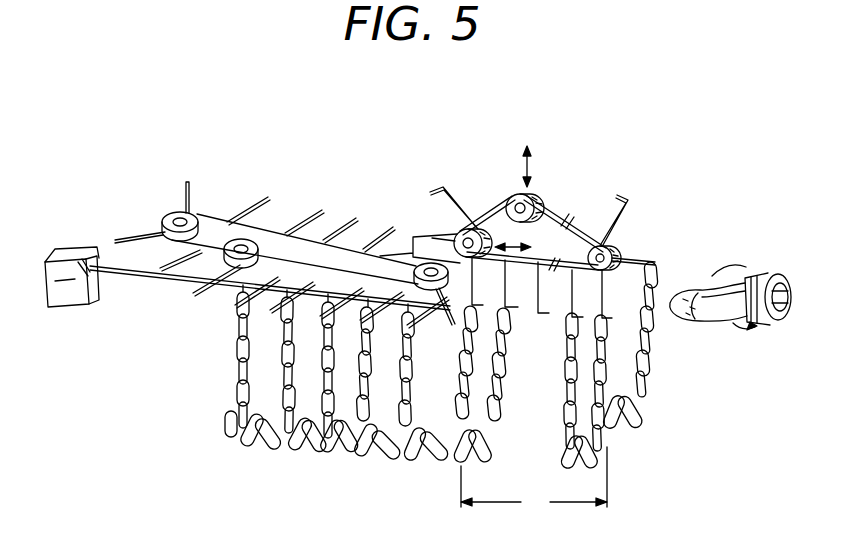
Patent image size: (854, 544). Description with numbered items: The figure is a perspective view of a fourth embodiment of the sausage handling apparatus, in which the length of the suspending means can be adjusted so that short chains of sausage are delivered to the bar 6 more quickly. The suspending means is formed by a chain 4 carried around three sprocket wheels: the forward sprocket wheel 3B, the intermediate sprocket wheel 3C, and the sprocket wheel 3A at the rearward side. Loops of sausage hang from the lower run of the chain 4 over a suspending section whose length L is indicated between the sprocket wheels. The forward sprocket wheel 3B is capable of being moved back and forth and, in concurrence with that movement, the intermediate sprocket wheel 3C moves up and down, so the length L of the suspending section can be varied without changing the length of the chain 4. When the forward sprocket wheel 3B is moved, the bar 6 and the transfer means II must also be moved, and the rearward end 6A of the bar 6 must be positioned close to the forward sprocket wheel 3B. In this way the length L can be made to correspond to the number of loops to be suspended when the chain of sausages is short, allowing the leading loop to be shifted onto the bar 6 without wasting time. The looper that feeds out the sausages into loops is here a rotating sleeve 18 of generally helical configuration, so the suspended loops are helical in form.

The transfer means II is at (324, 143).
The bar 6 is at (150, 279).
The rearward end of bar 6A is at (433, 291).
The sprocket wheel 3A is at (607, 247).
The forward sprocket wheel 3B is at (472, 228).
The intermediate sprocket wheel 3C is at (512, 197).
The chain 4 is at (551, 207).
The rotating sleeve 18 is at (718, 290).
The length of suspending section L is at (534, 481).